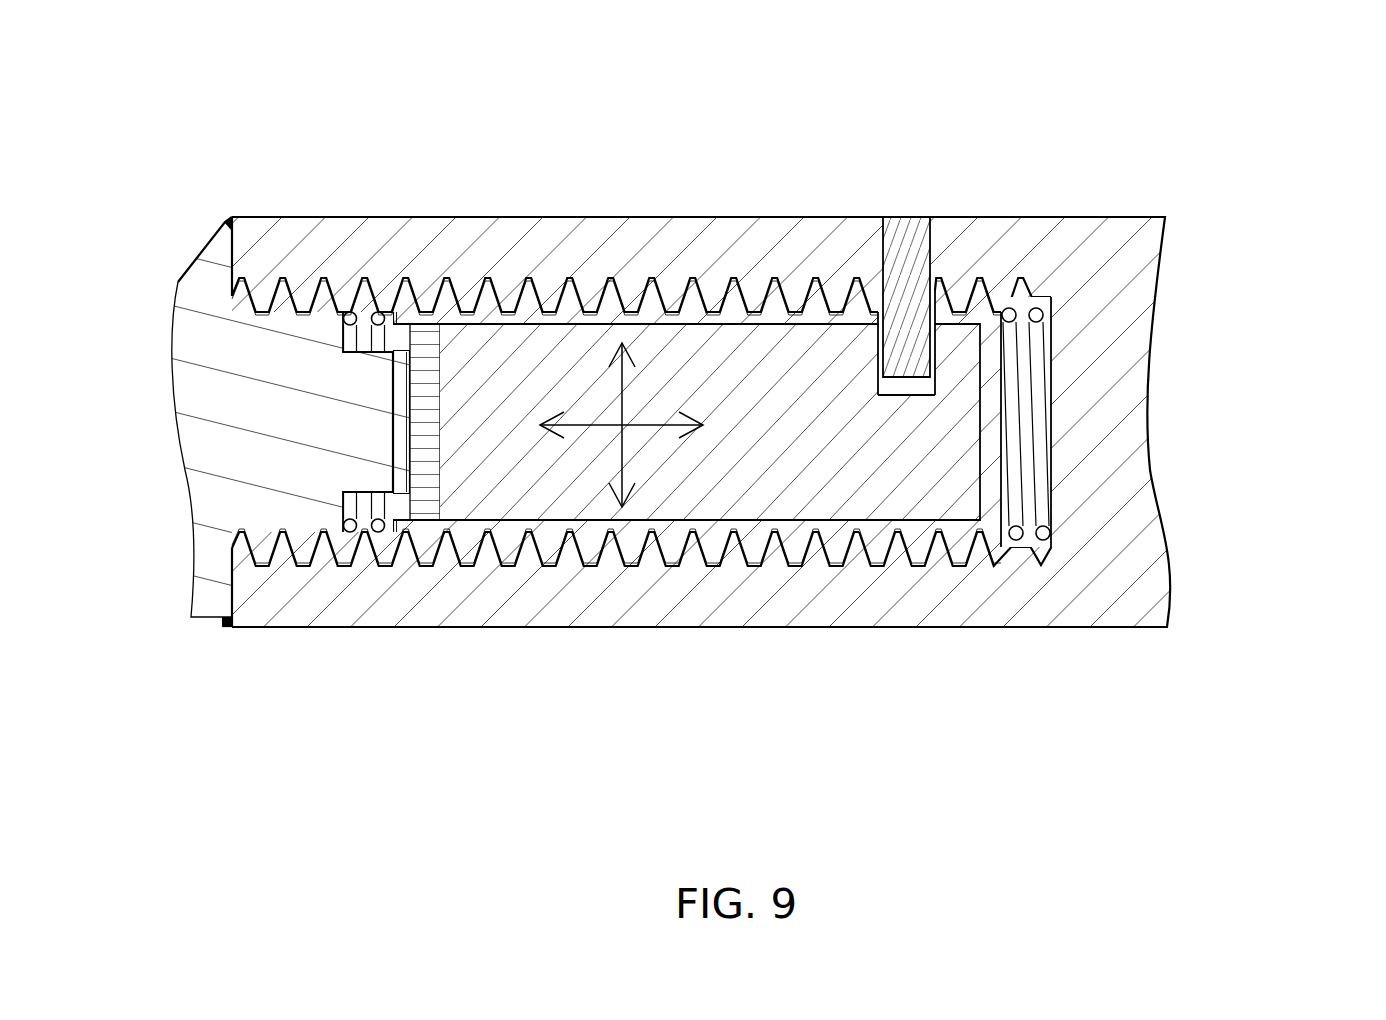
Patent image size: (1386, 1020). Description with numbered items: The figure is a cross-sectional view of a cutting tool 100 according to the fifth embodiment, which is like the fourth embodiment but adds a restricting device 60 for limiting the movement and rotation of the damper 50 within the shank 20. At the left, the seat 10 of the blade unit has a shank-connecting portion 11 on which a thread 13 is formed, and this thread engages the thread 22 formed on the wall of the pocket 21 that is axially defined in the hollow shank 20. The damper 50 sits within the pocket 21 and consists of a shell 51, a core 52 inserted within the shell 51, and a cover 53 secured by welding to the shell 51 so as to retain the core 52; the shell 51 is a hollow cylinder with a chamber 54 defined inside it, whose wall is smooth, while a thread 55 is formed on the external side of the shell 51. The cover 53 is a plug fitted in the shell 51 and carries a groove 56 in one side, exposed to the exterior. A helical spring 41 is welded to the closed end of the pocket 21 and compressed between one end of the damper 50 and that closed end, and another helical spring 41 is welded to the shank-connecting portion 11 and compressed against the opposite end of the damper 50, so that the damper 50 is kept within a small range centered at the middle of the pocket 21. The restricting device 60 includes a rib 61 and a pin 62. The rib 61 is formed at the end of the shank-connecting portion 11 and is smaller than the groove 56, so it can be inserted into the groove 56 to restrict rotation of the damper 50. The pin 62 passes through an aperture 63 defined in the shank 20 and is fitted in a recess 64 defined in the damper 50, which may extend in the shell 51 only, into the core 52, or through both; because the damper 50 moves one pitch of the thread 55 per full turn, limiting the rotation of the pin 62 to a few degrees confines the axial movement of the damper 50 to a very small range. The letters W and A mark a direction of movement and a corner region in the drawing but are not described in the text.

The seat 10 is at (203, 388).
The shank-connecting portion 11 is at (332, 502).
The thread 13 is at (253, 283).
The shank 20 is at (840, 600).
The pocket 21 is at (1043, 287).
The thread 22 is at (897, 553).
The helical spring 41 is at (1041, 433).
The damper 50 is at (733, 557).
The shell 51 is at (1000, 565).
The core 52 is at (790, 360).
The cover 53 is at (425, 363).
The chamber 54 is at (612, 517).
The thread 55 is at (610, 300).
The groove 56 is at (397, 505).
The restricting device 60 is at (920, 193).
The rib 61 is at (362, 392).
The pin 62 is at (922, 250).
The aperture 63 is at (895, 233).
The recess 64 is at (922, 383).
The cutting tool 100 is at (1241, 173).
The movement direction W is at (623, 402).
The corner A is at (230, 628).